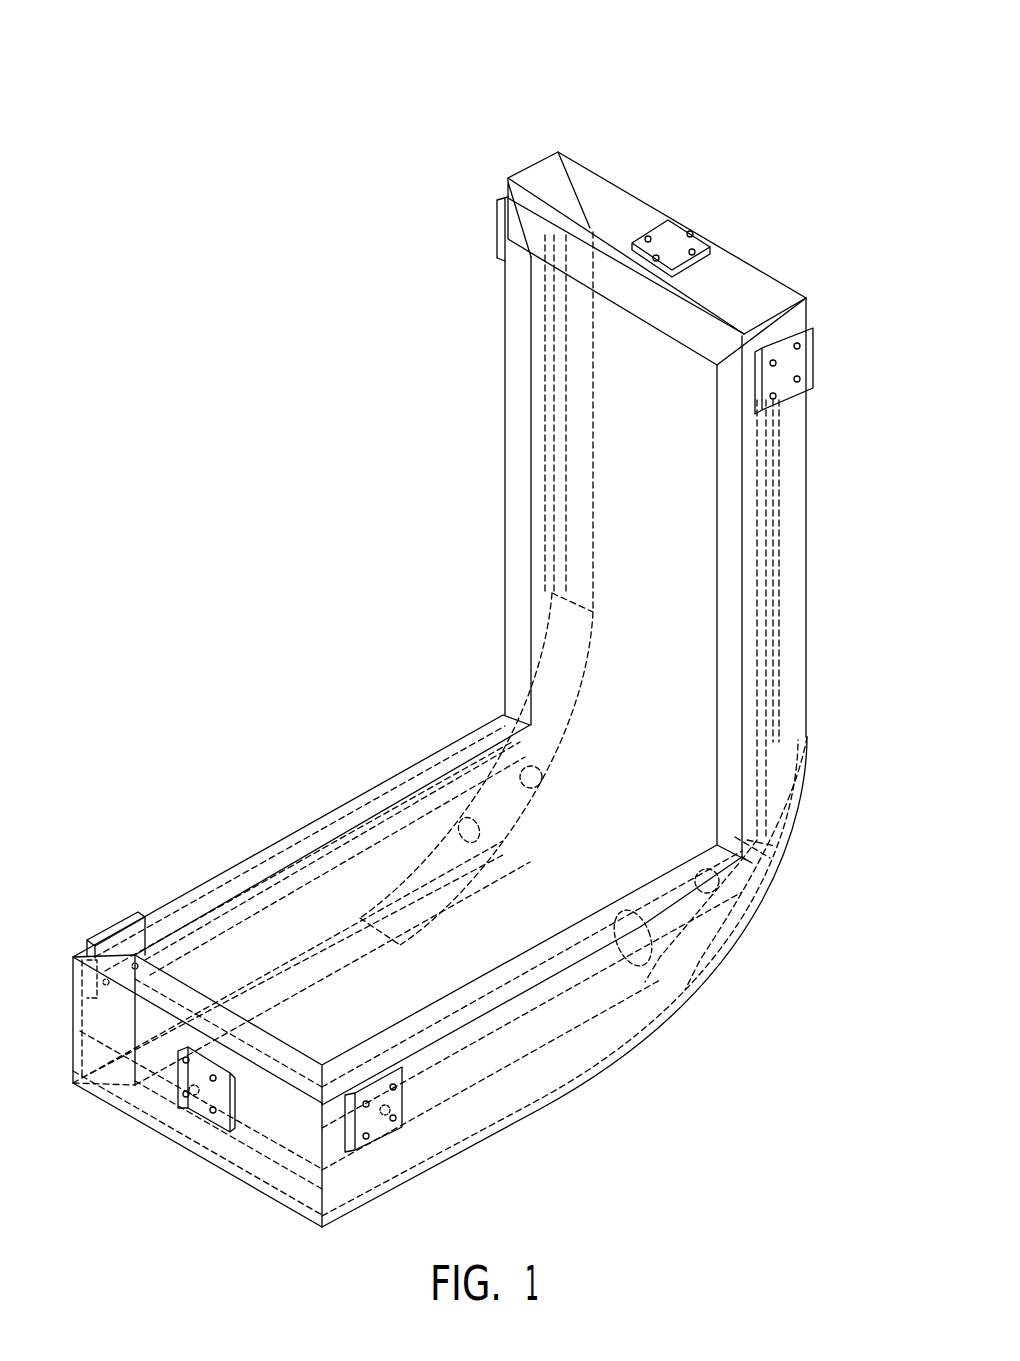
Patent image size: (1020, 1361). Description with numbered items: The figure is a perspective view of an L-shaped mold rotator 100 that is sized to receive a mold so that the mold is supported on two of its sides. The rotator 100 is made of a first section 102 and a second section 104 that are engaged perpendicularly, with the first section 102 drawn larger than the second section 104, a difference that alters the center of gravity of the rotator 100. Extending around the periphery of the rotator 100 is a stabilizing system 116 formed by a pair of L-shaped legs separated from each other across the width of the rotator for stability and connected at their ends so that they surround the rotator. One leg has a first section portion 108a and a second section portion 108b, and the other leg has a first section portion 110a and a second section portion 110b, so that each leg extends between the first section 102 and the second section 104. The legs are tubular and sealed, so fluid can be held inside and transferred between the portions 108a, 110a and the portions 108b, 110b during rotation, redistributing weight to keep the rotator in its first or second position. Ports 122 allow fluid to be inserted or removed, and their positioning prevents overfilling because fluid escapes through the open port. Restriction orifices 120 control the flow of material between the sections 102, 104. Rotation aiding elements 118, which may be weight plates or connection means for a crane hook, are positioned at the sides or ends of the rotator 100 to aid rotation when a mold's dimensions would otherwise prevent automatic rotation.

The rotator 100 is at (510, 72).
The first section 102 is at (439, 1122).
The second section 104 is at (814, 301).
The first section portion 108a is at (292, 858).
The second section portion 108b is at (518, 430).
The first section portion 110a is at (488, 985).
The second section portion 110b is at (727, 598).
The stabilizing system 116 is at (224, 890).
The rotation aiding elements 118 is at (678, 242).
The restriction orifices 120 is at (534, 698).
The ports 122 is at (540, 777).